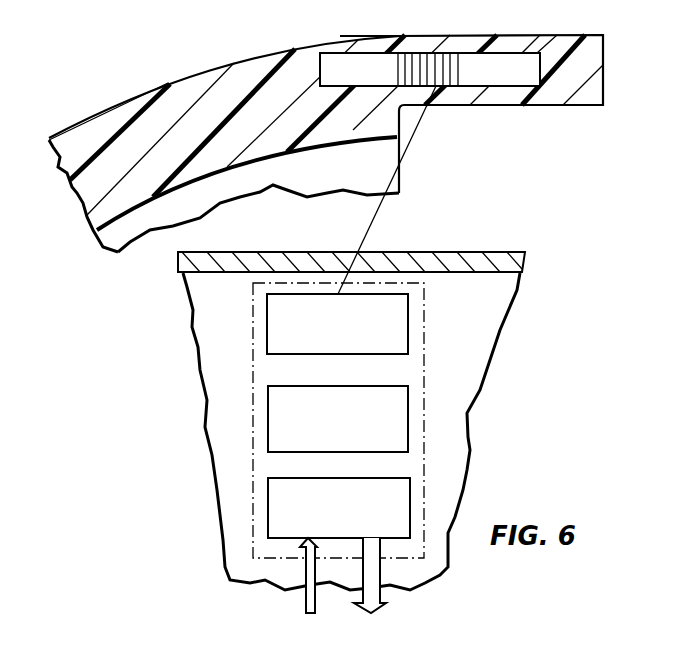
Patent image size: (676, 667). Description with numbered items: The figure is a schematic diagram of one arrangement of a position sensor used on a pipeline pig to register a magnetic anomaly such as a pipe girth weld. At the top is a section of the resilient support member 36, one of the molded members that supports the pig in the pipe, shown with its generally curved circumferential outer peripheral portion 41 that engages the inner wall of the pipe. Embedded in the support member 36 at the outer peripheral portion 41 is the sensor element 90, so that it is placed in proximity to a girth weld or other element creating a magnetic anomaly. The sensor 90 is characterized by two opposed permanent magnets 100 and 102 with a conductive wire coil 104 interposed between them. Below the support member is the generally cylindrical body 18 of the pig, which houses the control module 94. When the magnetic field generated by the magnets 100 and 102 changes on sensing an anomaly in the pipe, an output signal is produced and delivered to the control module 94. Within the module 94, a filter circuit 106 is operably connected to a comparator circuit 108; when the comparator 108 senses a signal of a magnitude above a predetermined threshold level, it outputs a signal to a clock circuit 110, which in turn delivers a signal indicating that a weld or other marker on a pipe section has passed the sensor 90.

The support member 36 is at (210, 68).
The outer peripheral portion 41 is at (368, 35).
The sensor element 90 is at (543, 47).
The conductive wire coil 104 is at (439, 89).
The permanent magnet 100 is at (330, 86).
The permanent magnet 102 is at (510, 86).
The body 18 is at (442, 250).
The control module 94 is at (252, 402).
The filter circuit 106 is at (408, 322).
The comparator circuit 108 is at (408, 397).
The clock circuit 110 is at (410, 505).